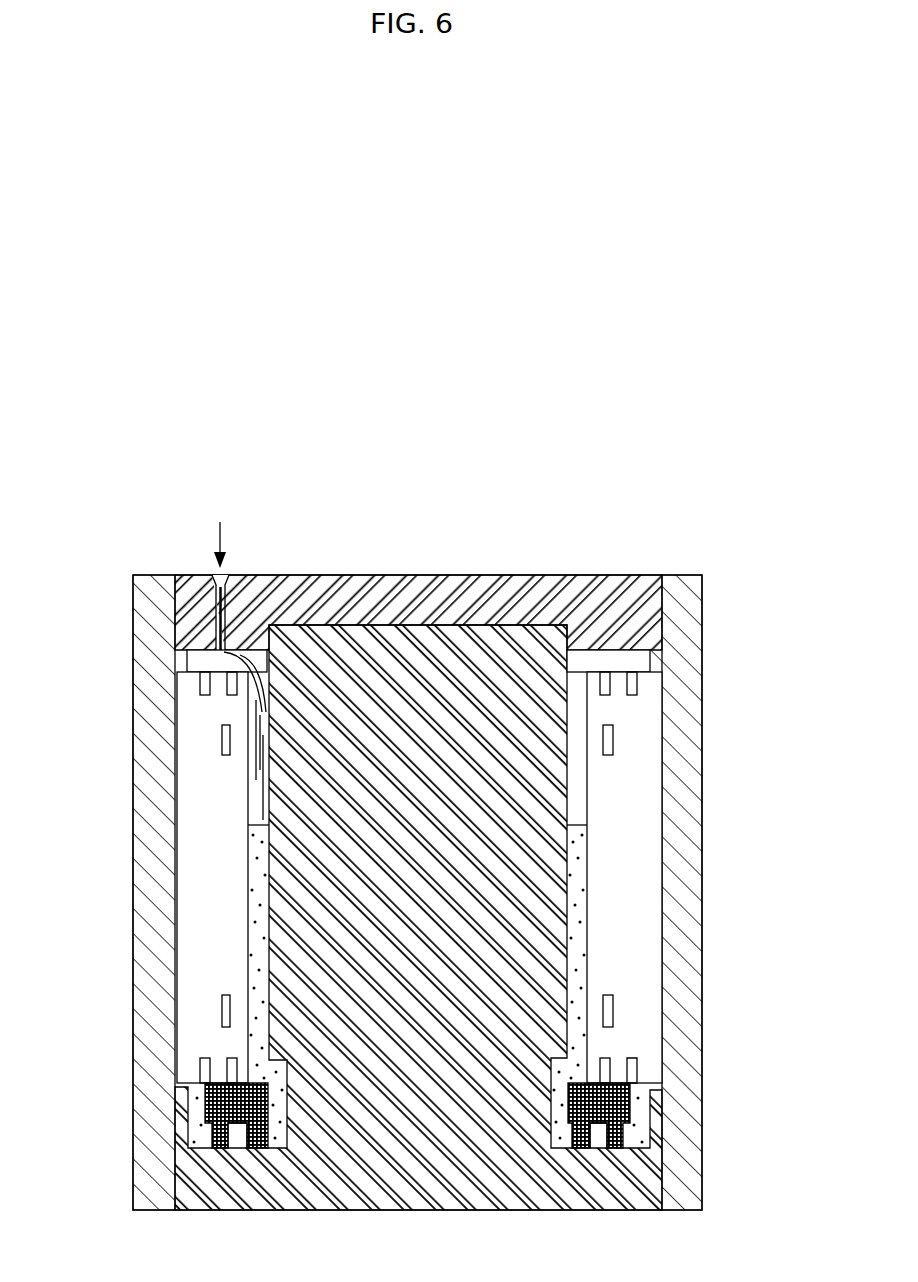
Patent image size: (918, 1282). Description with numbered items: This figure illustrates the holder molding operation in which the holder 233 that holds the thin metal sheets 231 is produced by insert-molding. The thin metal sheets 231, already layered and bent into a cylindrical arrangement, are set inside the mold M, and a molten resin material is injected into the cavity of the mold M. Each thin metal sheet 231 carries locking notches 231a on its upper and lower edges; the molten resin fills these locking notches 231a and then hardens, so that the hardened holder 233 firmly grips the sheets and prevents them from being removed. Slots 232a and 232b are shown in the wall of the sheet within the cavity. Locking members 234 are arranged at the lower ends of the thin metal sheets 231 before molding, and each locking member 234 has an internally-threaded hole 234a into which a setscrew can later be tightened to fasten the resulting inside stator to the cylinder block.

The mold M is at (570, 564).
The thin metal sheet 231 is at (197, 865).
The locking notch 231a is at (632, 690).
The first slot 232a is at (222, 738).
The second slot 232b is at (613, 740).
The holder 233 is at (255, 947).
The locking member 234 is at (205, 1091).
The internally-threaded hole 234a is at (234, 1138).